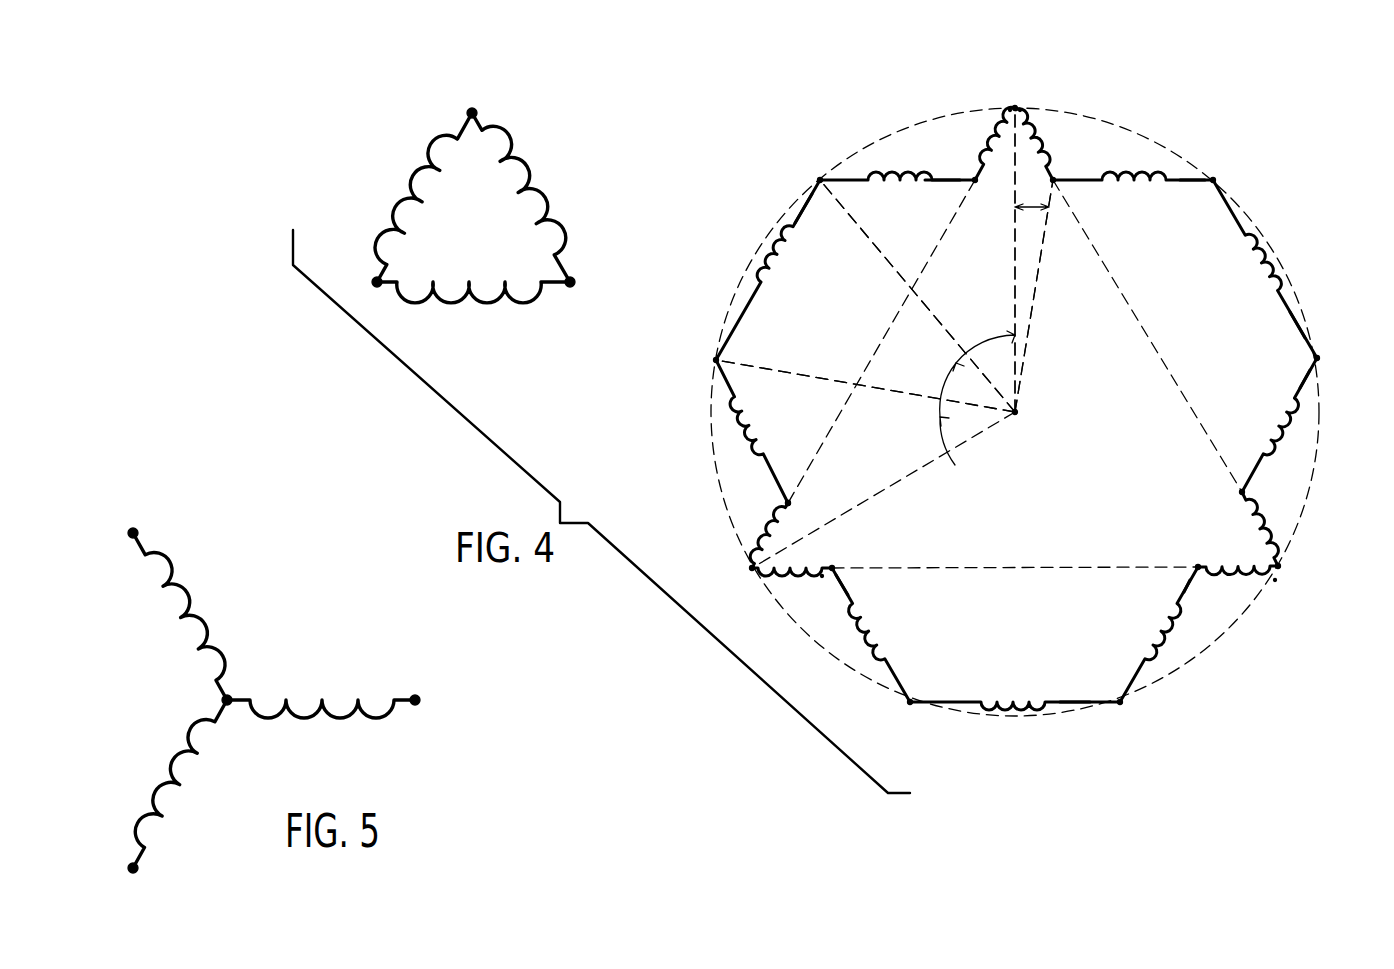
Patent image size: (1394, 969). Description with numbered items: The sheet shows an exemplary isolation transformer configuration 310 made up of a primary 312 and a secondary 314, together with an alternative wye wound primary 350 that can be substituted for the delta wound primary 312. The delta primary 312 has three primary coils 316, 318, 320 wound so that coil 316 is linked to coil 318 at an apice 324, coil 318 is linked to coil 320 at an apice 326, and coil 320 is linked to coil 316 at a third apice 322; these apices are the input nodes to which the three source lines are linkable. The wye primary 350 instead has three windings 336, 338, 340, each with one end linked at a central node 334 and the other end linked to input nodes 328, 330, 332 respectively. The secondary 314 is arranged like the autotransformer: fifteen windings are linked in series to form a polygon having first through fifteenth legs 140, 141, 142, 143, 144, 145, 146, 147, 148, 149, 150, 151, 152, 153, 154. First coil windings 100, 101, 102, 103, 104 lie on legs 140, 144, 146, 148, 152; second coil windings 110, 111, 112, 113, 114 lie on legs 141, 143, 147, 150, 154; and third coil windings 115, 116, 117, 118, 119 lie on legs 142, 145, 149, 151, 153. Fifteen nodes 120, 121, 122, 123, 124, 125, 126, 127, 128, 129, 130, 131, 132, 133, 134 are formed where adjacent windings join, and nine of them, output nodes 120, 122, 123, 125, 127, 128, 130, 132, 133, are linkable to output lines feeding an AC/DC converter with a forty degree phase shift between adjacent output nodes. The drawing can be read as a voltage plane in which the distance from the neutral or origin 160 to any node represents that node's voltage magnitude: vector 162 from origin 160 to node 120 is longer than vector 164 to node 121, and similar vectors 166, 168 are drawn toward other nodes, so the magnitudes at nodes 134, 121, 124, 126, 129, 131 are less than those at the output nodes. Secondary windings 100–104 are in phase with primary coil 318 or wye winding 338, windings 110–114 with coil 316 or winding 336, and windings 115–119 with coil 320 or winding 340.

In FIG. 4, the first coil first winding 100 is at (1135, 172).
In FIG. 4, the first coil second winding 101 is at (1245, 576).
In FIG. 4, the first coil third winding 102 is at (1000, 698).
In FIG. 4, the first coil fourth winding 103 is at (783, 580).
In FIG. 4, the first coil fifth winding 104 is at (893, 173).
In FIG. 4, the second coil first winding 110 is at (1280, 262).
In FIG. 4, the second coil second winding 111 is at (1270, 525).
In FIG. 4, the second coil third winding 112 is at (868, 635).
In FIG. 4, the second coil fourth winding 113 is at (748, 432).
In FIG. 4, the second coil fifth winding 114 is at (1045, 152).
In FIG. 4, the third coil first winding 115 is at (1275, 428).
In FIG. 4, the third coil second winding 116 is at (1170, 620).
In FIG. 4, the third coil third winding 117 is at (750, 566).
In FIG. 4, the third coil fourth winding 118 is at (758, 268).
In FIG. 4, the third coil fifth winding 119 is at (985, 150).
In FIG. 4, the output node 120 is at (1013, 106).
In FIG. 4, the secondary node 121 is at (1056, 183).
In FIG. 4, the output node 122 is at (1215, 178).
In FIG. 4, the output node 123 is at (1319, 358).
In FIG. 4, the secondary node 124 is at (1240, 492).
In FIG. 4, the output node 125 is at (1282, 570).
In FIG. 4, the secondary node 126 is at (1197, 565).
In FIG. 4, the output node 127 is at (1118, 700).
In FIG. 4, the output node 128 is at (908, 704).
In FIG. 4, the secondary node 129 is at (834, 567).
In FIG. 4, the output node 130 is at (752, 571).
In FIG. 4, the secondary node 131 is at (789, 500).
In FIG. 4, the output node 132 is at (715, 358).
In FIG. 4, the output node 133 is at (818, 178).
In FIG. 4, the secondary node 134 is at (976, 185).
In FIG. 4, the first leg 140 is at (1192, 178).
In FIG. 4, the second leg 141 is at (1297, 326).
In FIG. 4, the third leg 142 is at (1305, 385).
In FIG. 4, the fourth leg 143 is at (1282, 564).
In FIG. 4, the fifth leg 144 is at (1276, 585).
In FIG. 4, the sixth leg 145 is at (1192, 585).
In FIG. 4, the seventh leg 146 is at (1075, 700).
In FIG. 4, the eighth leg 147 is at (842, 590).
In FIG. 4, the ninth leg 148 is at (822, 578).
In FIG. 4, the tenth leg 149 is at (791, 504).
In FIG. 4, the eleventh leg 150 is at (772, 528).
In FIG. 4, the twelfth leg 151 is at (803, 212).
In FIG. 4, the thirteenth leg 152 is at (935, 183).
In FIG. 4, the fourteenth leg 153 is at (1008, 108).
In FIG. 4, the fifteenth leg 154 is at (1020, 108).
In FIG. 4, the neutral or origin 160 is at (1017, 412).
In FIG. 4, the vector 162 is at (1013, 256).
In FIG. 4, the vector 164 is at (1032, 283).
In FIG. 4, the radial line 166 is at (958, 345).
In FIG. 4, the radial line 168 is at (812, 378).
In FIG. 4, the isolation transformer configuration 310 is at (713, 86).
In FIG. 4, the primary 312 is at (386, 135).
In FIG. 4, the secondary 314 is at (1305, 233).
In FIG. 4, the primary coil 316 is at (540, 183).
In FIG. 4, the primary coil 318 is at (465, 302).
In FIG. 4, the primary coil 320 is at (400, 205).
In FIG. 4, the apice 322 is at (475, 112).
In FIG. 4, the apice 324 is at (572, 281).
In FIG. 4, the apice 326 is at (375, 281).
In FIG. 5, the input node 328 is at (131, 531).
In FIG. 5, the input node 330 is at (417, 698).
In FIG. 5, the input node 332 is at (131, 867).
In FIG. 5, the central node 334 is at (229, 702).
In FIG. 5, the winding 336 is at (222, 655).
In FIG. 5, the winding 338 is at (345, 698).
In FIG. 5, the winding 340 is at (190, 735).
In FIG. 5, the wye wound primary 350 is at (308, 604).